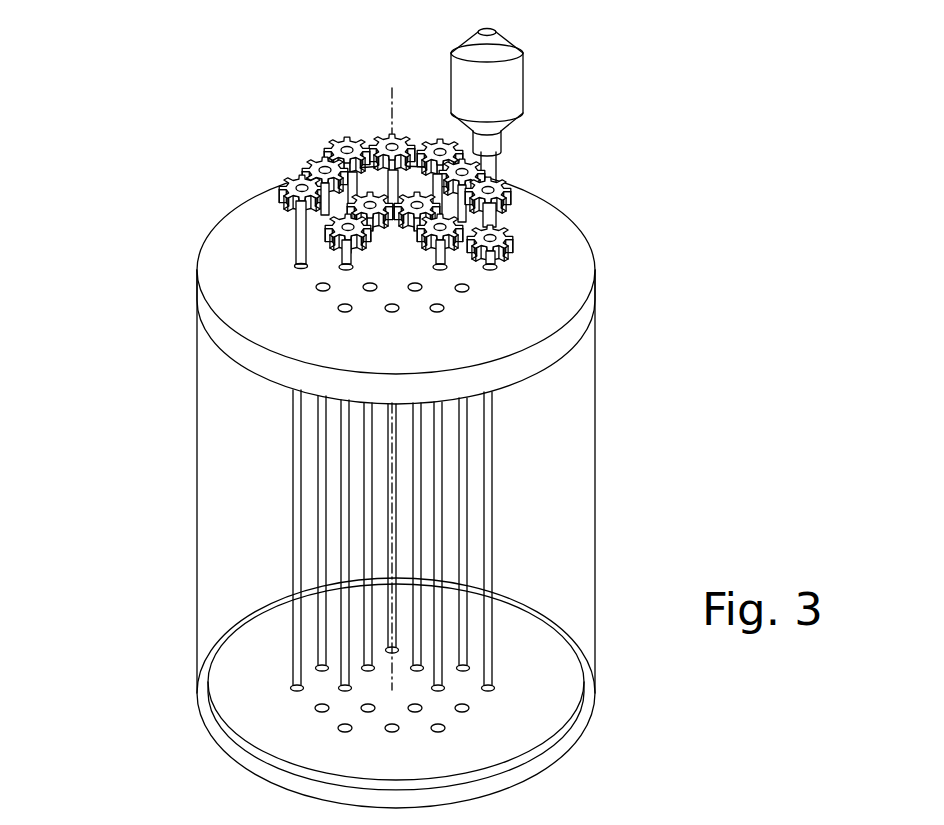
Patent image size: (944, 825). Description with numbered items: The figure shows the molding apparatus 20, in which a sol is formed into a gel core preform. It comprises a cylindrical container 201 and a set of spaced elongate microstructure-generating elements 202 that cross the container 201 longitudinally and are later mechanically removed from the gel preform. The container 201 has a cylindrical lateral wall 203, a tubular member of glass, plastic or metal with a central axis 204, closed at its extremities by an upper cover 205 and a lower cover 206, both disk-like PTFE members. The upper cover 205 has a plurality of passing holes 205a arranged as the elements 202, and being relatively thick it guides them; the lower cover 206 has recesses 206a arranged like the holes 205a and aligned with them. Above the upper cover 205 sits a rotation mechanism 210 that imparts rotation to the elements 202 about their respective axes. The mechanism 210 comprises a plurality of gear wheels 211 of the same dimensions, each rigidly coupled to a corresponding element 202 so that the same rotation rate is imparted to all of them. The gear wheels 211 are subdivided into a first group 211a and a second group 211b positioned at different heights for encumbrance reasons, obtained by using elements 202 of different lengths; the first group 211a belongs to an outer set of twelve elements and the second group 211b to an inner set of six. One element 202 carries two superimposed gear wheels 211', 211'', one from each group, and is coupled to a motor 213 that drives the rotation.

The molding apparatus 20 is at (682, 175).
The cylindrical container 201 is at (176, 362).
The microstructure-generating elements 202 is at (462, 437).
The cylindrical lateral wall 203 is at (207, 453).
The central axis 204 is at (392, 88).
The upper cover 205 is at (240, 215).
The passing holes 205a is at (490, 267).
The lower cover 206 is at (230, 665).
The recesses 206a is at (318, 708).
The rotation mechanism 210 is at (514, 155).
The gear wheels 211 is at (334, 194).
The gear wheel of the first group 211' is at (574, 202).
The gear wheel of the second group 211'' is at (580, 249).
The first group of gear wheels 211a is at (275, 233).
The second group of gear wheels 211b is at (318, 260).
The motor 213 is at (523, 79).